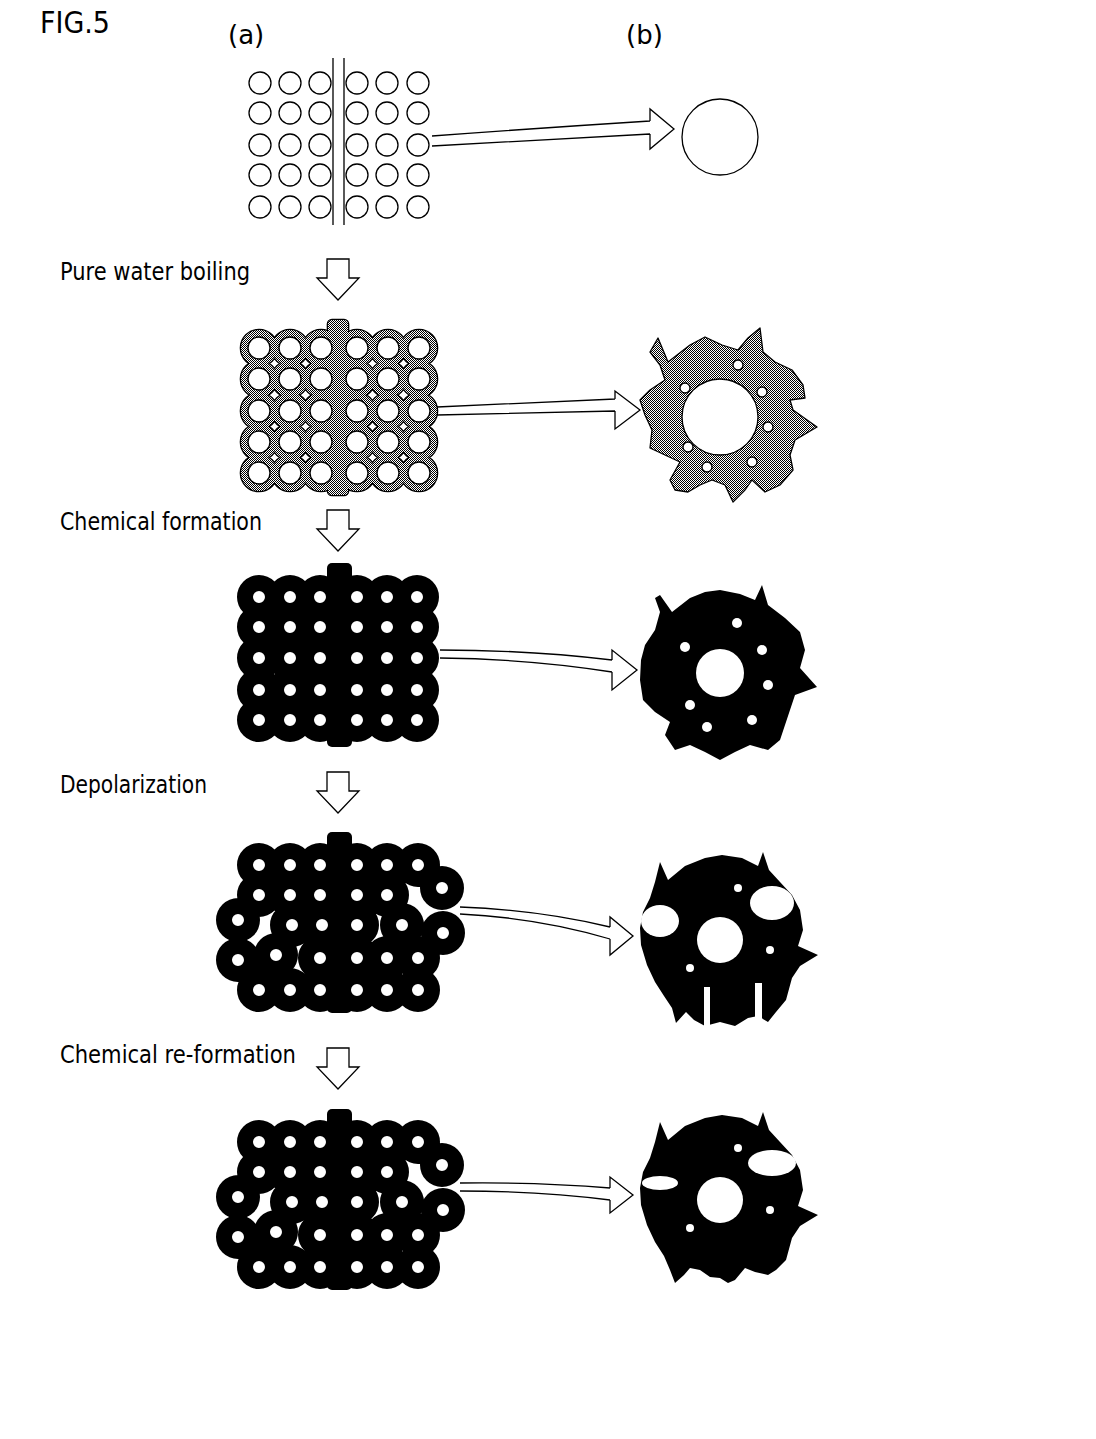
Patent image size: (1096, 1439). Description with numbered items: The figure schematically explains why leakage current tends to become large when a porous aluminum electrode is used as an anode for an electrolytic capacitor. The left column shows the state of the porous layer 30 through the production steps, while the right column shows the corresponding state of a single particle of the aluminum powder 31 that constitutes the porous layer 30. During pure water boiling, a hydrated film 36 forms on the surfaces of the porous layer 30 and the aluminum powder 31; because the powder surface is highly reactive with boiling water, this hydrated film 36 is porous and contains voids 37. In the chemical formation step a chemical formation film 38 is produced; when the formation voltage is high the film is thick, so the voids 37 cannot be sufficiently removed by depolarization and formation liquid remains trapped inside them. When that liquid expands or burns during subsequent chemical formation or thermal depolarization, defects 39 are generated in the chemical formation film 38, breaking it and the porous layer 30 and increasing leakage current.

The porous layer 30 is at (383, 573).
The aluminum powder 31 is at (428, 147).
The hydrated film 36 is at (436, 440).
The void 37 is at (762, 390).
The chemical formation film 38 is at (437, 690).
The defect 39 is at (780, 903).